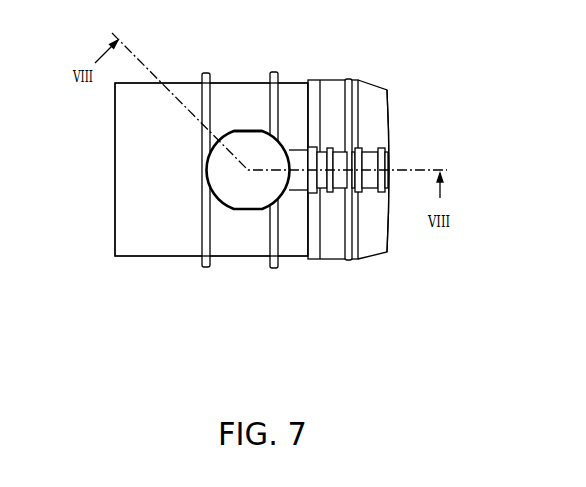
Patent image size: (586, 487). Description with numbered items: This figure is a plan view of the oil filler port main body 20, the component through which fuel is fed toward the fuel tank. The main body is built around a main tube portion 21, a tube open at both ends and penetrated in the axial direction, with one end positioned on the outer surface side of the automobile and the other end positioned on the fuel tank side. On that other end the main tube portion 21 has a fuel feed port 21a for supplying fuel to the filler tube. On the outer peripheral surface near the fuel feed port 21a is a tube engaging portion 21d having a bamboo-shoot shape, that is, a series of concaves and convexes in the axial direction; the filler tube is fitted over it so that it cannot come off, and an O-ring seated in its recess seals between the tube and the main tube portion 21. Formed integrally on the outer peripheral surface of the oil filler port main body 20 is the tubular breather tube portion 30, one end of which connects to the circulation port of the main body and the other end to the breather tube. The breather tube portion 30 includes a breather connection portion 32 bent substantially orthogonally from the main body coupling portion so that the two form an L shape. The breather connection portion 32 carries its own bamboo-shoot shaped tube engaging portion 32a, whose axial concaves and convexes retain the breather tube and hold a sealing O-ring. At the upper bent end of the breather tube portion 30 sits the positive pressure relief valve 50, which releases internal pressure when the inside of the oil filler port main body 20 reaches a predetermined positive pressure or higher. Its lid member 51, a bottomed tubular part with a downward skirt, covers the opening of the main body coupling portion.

The oil filler port main body 20 is at (142, 258).
The main tube portion 21 is at (170, 243).
The fuel feed port 21a is at (390, 127).
The tube engaging portion 21d is at (362, 80).
The breather tube portion 30 is at (342, 245).
The breather connection portion 32 is at (382, 190).
The tube engaging portion 32a is at (350, 190).
The positive pressure relief valve 50 is at (282, 140).
The lid member 51 is at (243, 133).